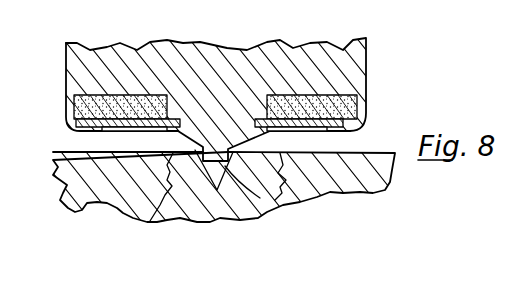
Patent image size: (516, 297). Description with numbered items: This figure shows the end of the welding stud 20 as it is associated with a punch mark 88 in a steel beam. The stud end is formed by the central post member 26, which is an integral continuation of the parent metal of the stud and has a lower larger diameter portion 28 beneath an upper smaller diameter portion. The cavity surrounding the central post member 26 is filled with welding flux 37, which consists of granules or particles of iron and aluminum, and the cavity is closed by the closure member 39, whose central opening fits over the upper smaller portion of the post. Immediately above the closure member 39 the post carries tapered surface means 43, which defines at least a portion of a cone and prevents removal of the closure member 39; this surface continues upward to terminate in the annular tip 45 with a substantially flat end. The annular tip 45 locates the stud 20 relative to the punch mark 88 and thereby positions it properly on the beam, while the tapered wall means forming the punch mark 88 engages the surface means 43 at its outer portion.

The welding stud 20 is at (373, 69).
The central post member 26 is at (213, 108).
The welding flux 37 is at (362, 100).
The closure member 39 is at (310, 133).
The annular tip 45 is at (315, 197).
The surface means 43 is at (150, 220).
The punch mark 88 is at (260, 220).
The lower larger diameter portion 28 is at (506, 10).